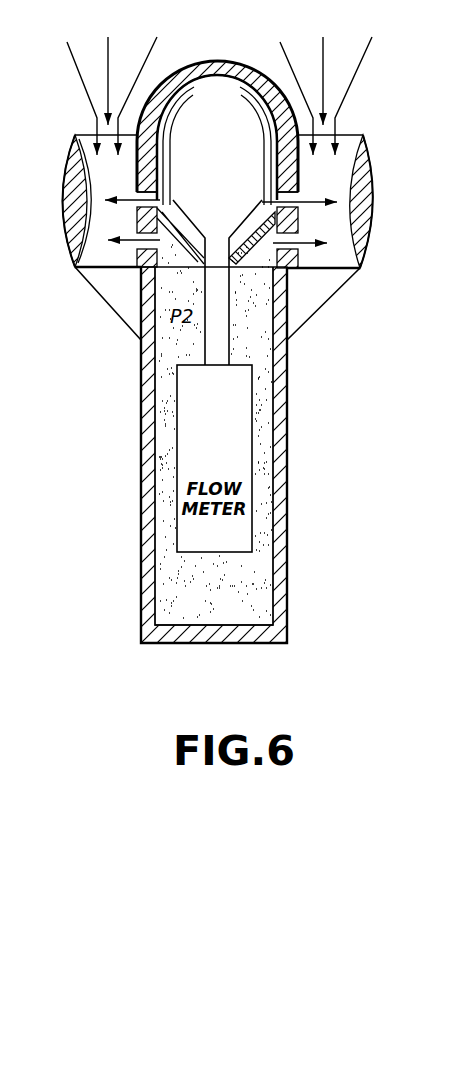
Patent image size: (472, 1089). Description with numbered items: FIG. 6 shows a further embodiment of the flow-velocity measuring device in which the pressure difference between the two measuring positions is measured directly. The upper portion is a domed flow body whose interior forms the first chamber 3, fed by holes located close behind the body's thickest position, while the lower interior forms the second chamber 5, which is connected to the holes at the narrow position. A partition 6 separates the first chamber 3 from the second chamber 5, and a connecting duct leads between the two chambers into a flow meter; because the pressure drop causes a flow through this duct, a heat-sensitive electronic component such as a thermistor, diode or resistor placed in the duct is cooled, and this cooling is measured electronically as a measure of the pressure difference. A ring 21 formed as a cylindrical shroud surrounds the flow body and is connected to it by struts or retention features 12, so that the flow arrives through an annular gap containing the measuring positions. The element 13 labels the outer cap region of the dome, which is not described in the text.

The first chamber 3 is at (228, 98).
The second chamber 5 is at (250, 334).
The partition 6 is at (254, 247).
The retention features 12 is at (305, 322).
The cap 13 is at (190, 68).
The ring 21 is at (372, 195).